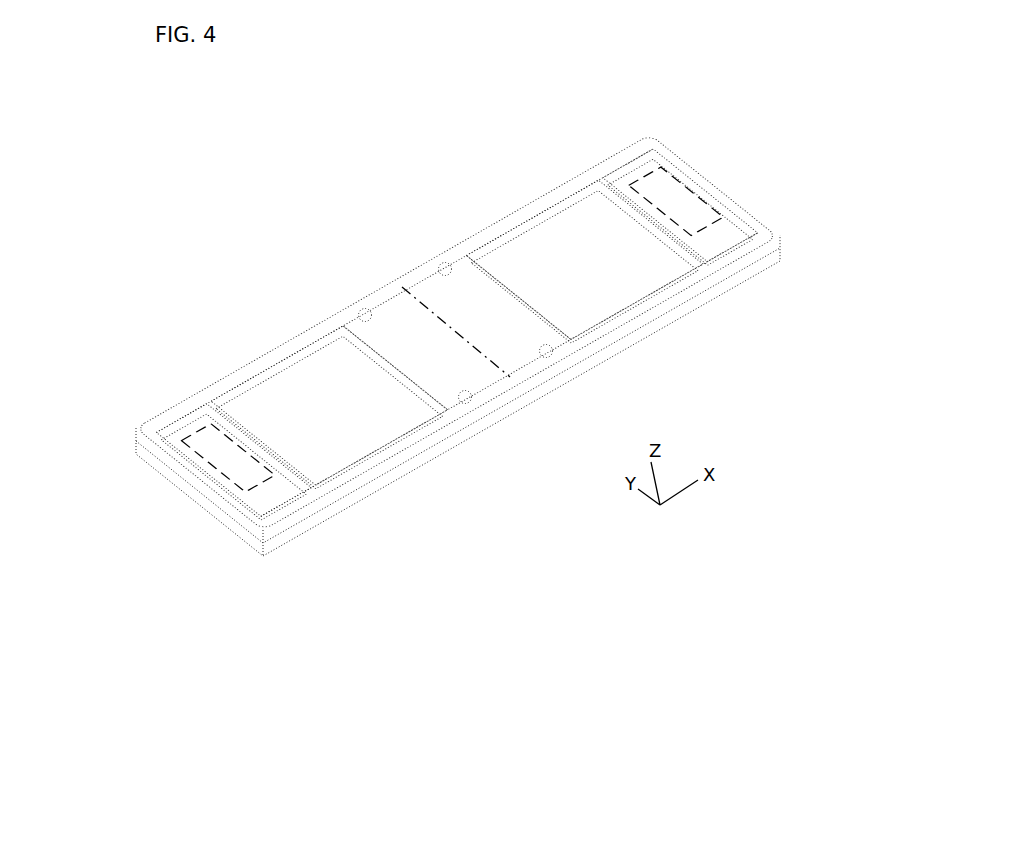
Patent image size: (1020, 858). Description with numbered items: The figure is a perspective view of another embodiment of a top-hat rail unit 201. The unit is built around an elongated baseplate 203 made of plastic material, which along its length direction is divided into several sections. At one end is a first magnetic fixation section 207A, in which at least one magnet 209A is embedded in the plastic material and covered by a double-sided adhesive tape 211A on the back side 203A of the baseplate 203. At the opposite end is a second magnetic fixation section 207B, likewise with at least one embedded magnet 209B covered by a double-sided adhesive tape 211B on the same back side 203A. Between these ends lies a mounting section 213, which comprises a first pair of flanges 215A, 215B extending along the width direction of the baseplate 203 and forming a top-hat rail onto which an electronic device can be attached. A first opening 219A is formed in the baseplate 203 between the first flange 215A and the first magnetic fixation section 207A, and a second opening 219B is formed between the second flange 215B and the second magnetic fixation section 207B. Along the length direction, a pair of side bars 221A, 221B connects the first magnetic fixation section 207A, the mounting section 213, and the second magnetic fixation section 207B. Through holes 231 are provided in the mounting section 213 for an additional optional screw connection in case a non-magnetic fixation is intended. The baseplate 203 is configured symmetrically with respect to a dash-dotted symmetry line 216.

The top-hat rail unit 201 is at (156, 157).
The baseplate 203 is at (762, 265).
The back side 203A is at (659, 100).
The first magnetic fixation section 207A is at (597, 152).
The second magnetic fixation section 207B is at (134, 410).
The magnet 209A is at (692, 190).
The magnet 209B is at (210, 467).
The double-sided adhesive tape 211A is at (738, 202).
The double-sided adhesive tape 211B is at (244, 507).
The mounting section 213 is at (536, 334).
The first flange 215A is at (518, 296).
The second flange 215B is at (387, 390).
The symmetry line 216 is at (450, 329).
The first opening 219A is at (552, 227).
The second opening 219B is at (303, 374).
The side bar 221A is at (303, 330).
The side bar 221B is at (597, 340).
The through holes 231 is at (367, 306).